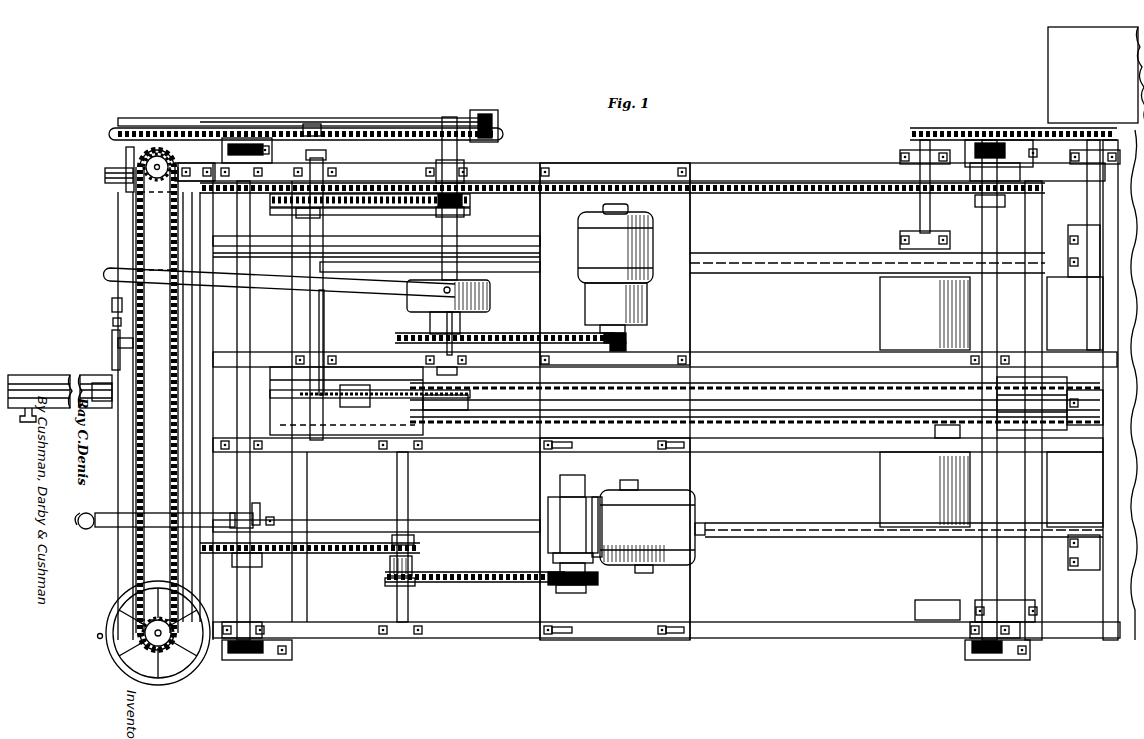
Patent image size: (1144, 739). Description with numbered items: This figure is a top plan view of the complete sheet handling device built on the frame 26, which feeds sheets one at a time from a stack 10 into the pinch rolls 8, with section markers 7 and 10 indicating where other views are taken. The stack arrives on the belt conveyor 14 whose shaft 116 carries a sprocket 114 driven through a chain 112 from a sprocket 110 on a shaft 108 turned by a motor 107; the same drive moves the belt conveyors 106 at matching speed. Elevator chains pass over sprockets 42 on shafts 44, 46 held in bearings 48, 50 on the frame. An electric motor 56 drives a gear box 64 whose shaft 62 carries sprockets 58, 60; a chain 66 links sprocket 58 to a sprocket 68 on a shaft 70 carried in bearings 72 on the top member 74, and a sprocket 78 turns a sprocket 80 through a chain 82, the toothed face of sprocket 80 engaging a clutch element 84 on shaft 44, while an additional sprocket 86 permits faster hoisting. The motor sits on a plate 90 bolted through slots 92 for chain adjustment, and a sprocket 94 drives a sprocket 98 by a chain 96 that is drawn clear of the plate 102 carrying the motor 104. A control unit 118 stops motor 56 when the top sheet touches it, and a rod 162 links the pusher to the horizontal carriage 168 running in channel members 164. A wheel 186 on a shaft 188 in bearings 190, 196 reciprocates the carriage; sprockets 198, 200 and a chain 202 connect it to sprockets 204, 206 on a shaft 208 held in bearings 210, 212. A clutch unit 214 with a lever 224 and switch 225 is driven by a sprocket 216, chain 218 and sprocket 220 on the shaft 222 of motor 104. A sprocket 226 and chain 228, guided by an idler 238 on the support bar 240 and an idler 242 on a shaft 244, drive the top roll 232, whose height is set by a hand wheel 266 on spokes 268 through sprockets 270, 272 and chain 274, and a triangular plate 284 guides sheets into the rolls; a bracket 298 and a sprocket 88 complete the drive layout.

The section line 7 is at (266, 428).
The pinch rolls 8 is at (113, 323).
The stack 10 is at (904, 447).
The belt conveyor 14 is at (1060, 318).
The frame 26 is at (766, 649).
The sprockets 42 is at (250, 143).
The shaft 44 is at (240, 304).
The shaft 46 is at (997, 565).
The bearings 48 is at (210, 170).
The bearings 50 is at (970, 160).
The electric motor 56 is at (646, 497).
The sprocket 58 is at (588, 578).
The sprocket 60 is at (592, 576).
The shaft 62 is at (568, 588).
The gear box 64 is at (566, 500).
The chain 66 is at (480, 574).
The sprocket 68 is at (385, 582).
The shaft 70 is at (408, 598).
The bearings 72 is at (407, 455).
The top member 74 is at (372, 165).
The sprocket 78 is at (410, 556).
The sprocket 80 is at (248, 560).
The chain 82 is at (318, 560).
The toothed clutch element 84 is at (256, 506).
The sprocket 86 is at (82, 513).
The sprocket 88 is at (390, 566).
The plate 90 is at (683, 602).
The slots 92 is at (570, 448).
The sprocket 94 is at (252, 195).
The chain 96 is at (745, 194).
The sprocket 98 is at (980, 204).
The plate 102 is at (688, 216).
The motor 104 is at (655, 252).
The belt conveyors 106 is at (805, 242).
The motor 107 is at (1056, 49).
The shaft 108 is at (921, 210).
The sprocket 110 is at (920, 128).
The chain 112 is at (965, 128).
The sprocket 114 is at (1104, 135).
The shaft 116 is at (1088, 198).
The control unit 118 is at (950, 440).
The rod 162 is at (882, 386).
The channel members 164 is at (368, 352).
The horizontal carriage 168 is at (335, 432).
The wheel 186 is at (306, 392).
The shaft 188 is at (322, 303).
The bearing 190 is at (324, 342).
The bearing 196 is at (325, 166).
The sprocket 198 is at (330, 210).
The sprocket 200 is at (346, 196).
The chain 202 is at (382, 216).
The sprocket 204 is at (464, 212).
The sprocket 206 is at (465, 198).
The shaft 208 is at (458, 240).
The bearing 210 is at (456, 370).
The bearing 212 is at (462, 165).
The clutch unit 214 is at (485, 296).
The sprocket 216 is at (432, 327).
The chain 218 is at (492, 334).
The sprocket 220 is at (628, 338).
The shaft 222 is at (618, 350).
The lever 224 is at (110, 274).
The switch 225 is at (133, 348).
The sprocket 226 is at (495, 136).
The chain 228 is at (395, 125).
The top roll 232 is at (114, 304).
The idler 238 is at (315, 125).
The support bar 240 is at (226, 100).
The idler 242 is at (118, 136).
The shaft 244 is at (126, 150).
The hand wheel 266 is at (170, 680).
The spokes 268 is at (190, 655).
The sprocket 270 is at (158, 648).
The sprocket 272 is at (165, 166).
The chain 274 is at (120, 344).
The triangular plate 284 is at (58, 356).
The bracket 298 is at (1090, 214).